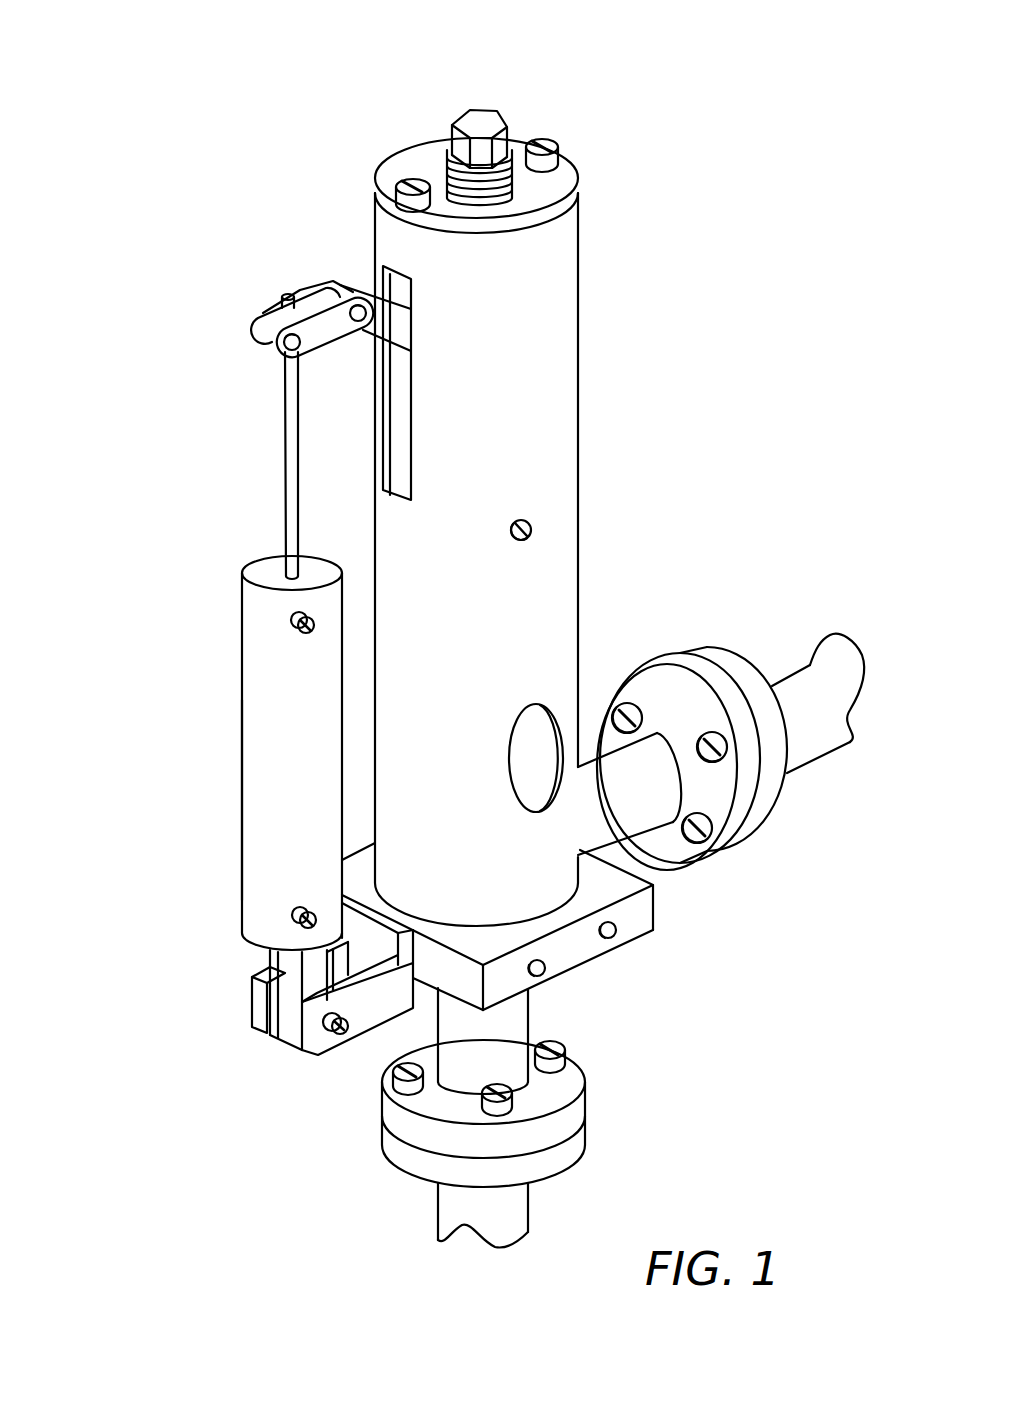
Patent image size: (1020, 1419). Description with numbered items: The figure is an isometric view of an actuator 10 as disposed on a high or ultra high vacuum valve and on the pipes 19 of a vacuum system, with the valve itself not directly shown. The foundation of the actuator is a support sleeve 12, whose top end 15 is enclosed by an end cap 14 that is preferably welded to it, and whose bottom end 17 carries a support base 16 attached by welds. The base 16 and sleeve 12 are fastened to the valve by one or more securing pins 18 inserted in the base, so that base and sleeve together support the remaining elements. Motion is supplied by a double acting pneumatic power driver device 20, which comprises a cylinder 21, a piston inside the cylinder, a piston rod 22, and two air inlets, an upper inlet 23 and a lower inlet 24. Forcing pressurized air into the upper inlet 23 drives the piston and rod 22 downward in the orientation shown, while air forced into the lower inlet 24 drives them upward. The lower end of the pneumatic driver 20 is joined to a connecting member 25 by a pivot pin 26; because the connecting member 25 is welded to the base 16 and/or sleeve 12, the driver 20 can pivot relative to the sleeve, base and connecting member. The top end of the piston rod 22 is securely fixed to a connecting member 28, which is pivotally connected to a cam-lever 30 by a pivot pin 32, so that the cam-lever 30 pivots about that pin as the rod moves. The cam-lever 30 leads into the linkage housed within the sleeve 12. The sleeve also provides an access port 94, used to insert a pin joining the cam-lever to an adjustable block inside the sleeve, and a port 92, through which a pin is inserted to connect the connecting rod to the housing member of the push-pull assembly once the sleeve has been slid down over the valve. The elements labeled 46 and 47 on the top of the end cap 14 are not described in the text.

The actuator 10 is at (152, 228).
The support sleeve 12 is at (522, 400).
The end cap 14 is at (550, 202).
The top end 15 is at (550, 233).
The support base 16 is at (562, 968).
The bottom end 17 is at (538, 902).
The securing pins 18 is at (620, 940).
The pipes 19 is at (810, 675).
The double acting pneumatic power driver device 20 is at (242, 705).
The cylinder 21 is at (272, 826).
The piston rod 22 is at (285, 472).
The upper inlet 23 is at (304, 631).
The lower inlet 24 is at (307, 916).
The connecting member 25 is at (362, 1008).
The pivot pin 26 is at (307, 1018).
The connecting member 28 is at (318, 330).
The cam-lever 30 is at (360, 292).
The pivot pin 32 is at (350, 333).
The hex plug 46 is at (477, 115).
The cap screws 47 is at (412, 167).
The port 92 is at (533, 743).
The access port 94 is at (532, 536).